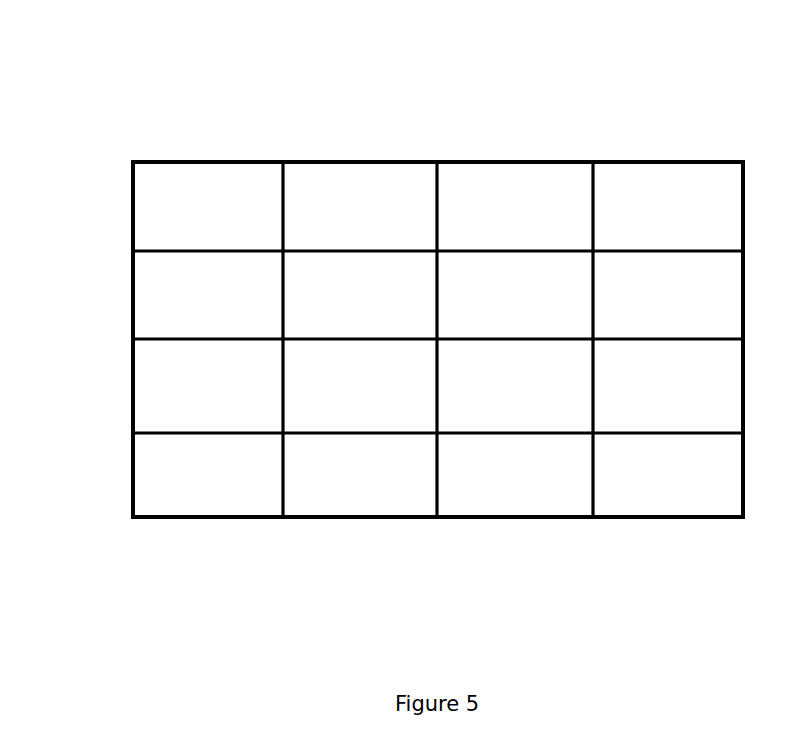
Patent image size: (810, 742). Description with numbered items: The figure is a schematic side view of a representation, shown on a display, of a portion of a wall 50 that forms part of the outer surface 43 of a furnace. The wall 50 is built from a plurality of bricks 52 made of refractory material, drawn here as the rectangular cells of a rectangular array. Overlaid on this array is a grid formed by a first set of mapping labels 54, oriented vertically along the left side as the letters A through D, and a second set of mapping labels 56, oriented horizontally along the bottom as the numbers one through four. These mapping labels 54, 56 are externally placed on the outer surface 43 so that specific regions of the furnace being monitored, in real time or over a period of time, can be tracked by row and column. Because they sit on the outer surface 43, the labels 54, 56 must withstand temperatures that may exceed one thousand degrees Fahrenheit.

The wall 50 is at (415, 106).
The outer surface 43 is at (512, 156).
The bricks 52 is at (344, 186).
The first set of mapping labels 54 is at (132, 208).
The second set of mapping labels 56 is at (202, 513).